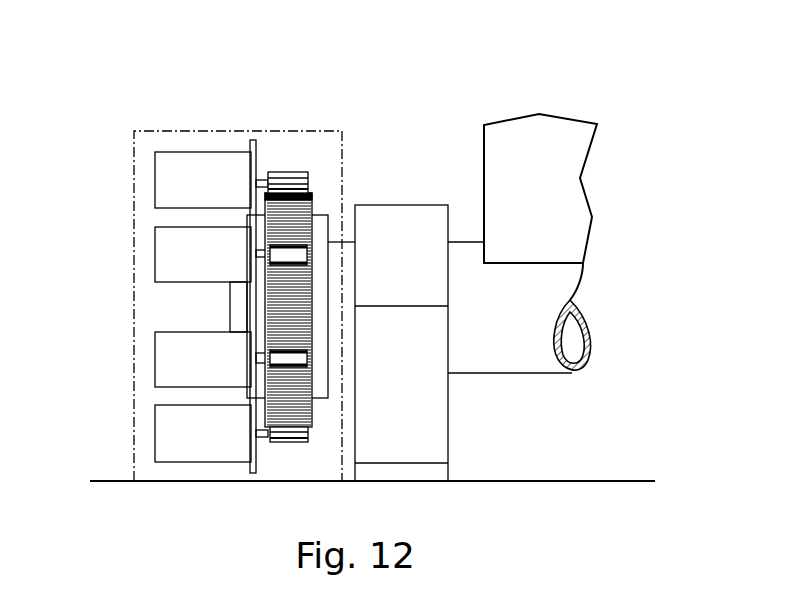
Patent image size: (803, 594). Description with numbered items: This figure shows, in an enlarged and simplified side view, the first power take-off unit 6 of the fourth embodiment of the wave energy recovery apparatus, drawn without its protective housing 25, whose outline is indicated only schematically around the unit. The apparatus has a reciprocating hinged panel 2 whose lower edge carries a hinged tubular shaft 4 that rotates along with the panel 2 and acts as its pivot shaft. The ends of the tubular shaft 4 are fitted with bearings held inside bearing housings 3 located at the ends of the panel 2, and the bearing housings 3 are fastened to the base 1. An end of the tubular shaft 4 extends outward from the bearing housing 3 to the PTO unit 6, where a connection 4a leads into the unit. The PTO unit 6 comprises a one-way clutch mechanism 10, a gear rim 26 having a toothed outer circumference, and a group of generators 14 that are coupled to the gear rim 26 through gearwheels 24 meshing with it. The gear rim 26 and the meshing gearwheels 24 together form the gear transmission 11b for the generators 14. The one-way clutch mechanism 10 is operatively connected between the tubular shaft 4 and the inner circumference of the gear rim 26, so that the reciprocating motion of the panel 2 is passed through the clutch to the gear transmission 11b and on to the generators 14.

The base 1 is at (620, 481).
The panel 2 is at (578, 160).
The bearing housing 3 is at (407, 212).
The tubular shaft 4 is at (487, 365).
The connection 4a is at (232, 298).
The power take-off unit 6 is at (190, 74).
The one-way clutch mechanism 10 is at (329, 380).
The gear transmission 11b is at (300, 147).
The generators 14 is at (157, 433).
The gearwheel 24 is at (273, 175).
The protective housing 25 is at (133, 142).
The gear rim 26 is at (312, 415).